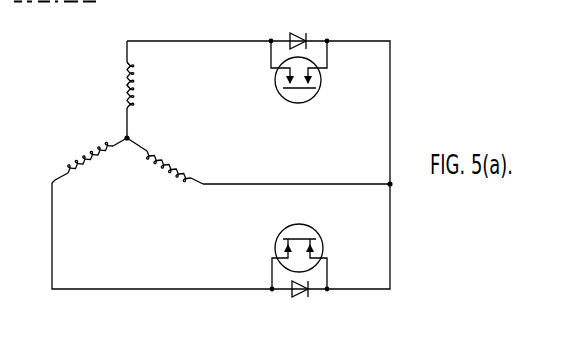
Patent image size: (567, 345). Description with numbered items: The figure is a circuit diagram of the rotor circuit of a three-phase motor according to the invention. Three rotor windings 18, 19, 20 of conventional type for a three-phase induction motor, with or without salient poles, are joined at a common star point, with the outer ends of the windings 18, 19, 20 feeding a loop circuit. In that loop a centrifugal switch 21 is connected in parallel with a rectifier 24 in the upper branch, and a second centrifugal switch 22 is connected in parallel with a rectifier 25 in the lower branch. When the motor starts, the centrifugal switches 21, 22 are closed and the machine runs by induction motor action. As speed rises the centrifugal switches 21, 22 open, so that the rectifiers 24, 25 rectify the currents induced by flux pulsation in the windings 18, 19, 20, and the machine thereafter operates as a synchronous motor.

The rotor winding 18 is at (119, 89).
The rotor winding 19 is at (65, 169).
The rotor winding 20 is at (150, 166).
The centrifugal switch 21 is at (320, 81).
The centrifugal switch 22 is at (295, 262).
The rectifier 24 is at (299, 8).
The rectifier 25 is at (316, 286).